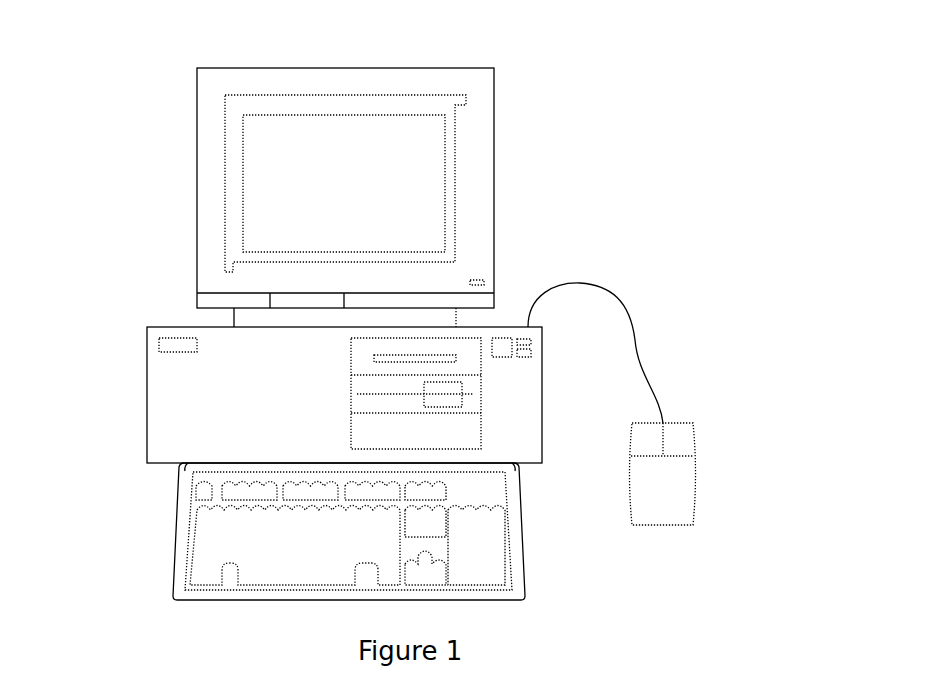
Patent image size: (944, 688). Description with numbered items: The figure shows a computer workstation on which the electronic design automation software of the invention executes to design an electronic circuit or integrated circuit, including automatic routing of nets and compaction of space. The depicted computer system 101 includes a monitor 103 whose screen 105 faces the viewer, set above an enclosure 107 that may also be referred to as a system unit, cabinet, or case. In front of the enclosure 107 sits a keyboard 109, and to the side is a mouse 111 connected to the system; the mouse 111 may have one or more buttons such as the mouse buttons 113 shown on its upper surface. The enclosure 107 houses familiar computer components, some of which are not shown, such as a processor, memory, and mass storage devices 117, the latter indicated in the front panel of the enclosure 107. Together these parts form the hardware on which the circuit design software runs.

The computer system 101 is at (514, 46).
The monitor 103 is at (494, 160).
The screen 105 is at (260, 172).
The enclosure 107 is at (176, 330).
The keyboard 109 is at (222, 600).
The mouse 111 is at (663, 513).
The mouse buttons 113 is at (653, 443).
The mass storage devices 117 is at (473, 343).